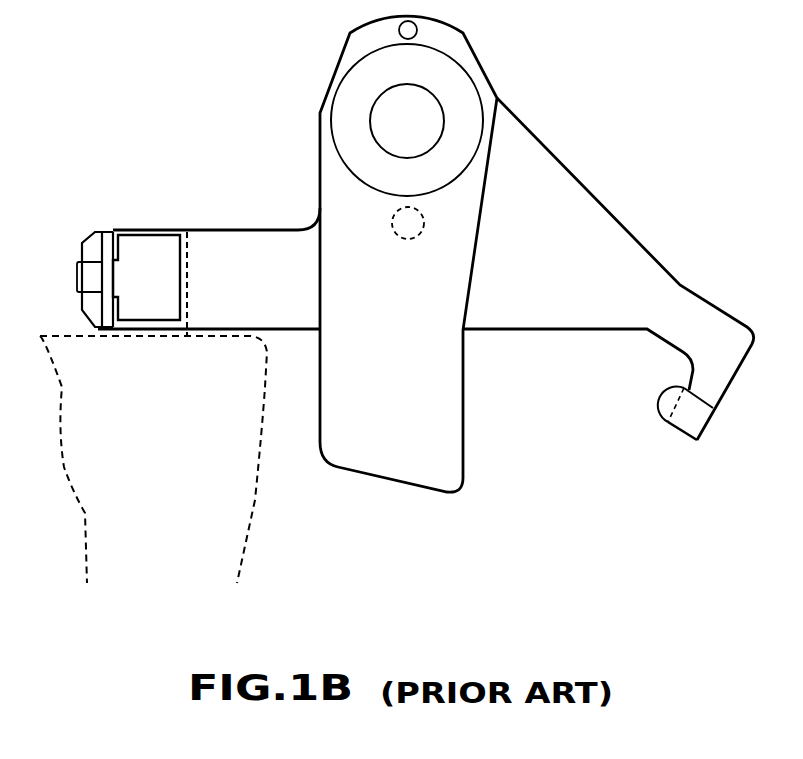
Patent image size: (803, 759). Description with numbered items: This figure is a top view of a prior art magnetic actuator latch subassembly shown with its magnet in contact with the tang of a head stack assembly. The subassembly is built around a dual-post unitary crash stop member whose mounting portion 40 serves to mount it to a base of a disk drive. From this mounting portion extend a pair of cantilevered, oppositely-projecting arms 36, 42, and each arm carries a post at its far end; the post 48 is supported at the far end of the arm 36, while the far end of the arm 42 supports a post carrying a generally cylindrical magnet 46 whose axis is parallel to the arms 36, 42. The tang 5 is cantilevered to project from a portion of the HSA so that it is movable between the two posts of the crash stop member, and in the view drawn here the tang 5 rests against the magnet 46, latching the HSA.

The tang 5 is at (192, 290).
The arm 36 is at (575, 172).
The mounting portion 40 is at (457, 83).
The arm 42 is at (260, 233).
The magnet 46 is at (135, 243).
The post 48 is at (695, 420).
The head stack assembly HSA is at (248, 515).